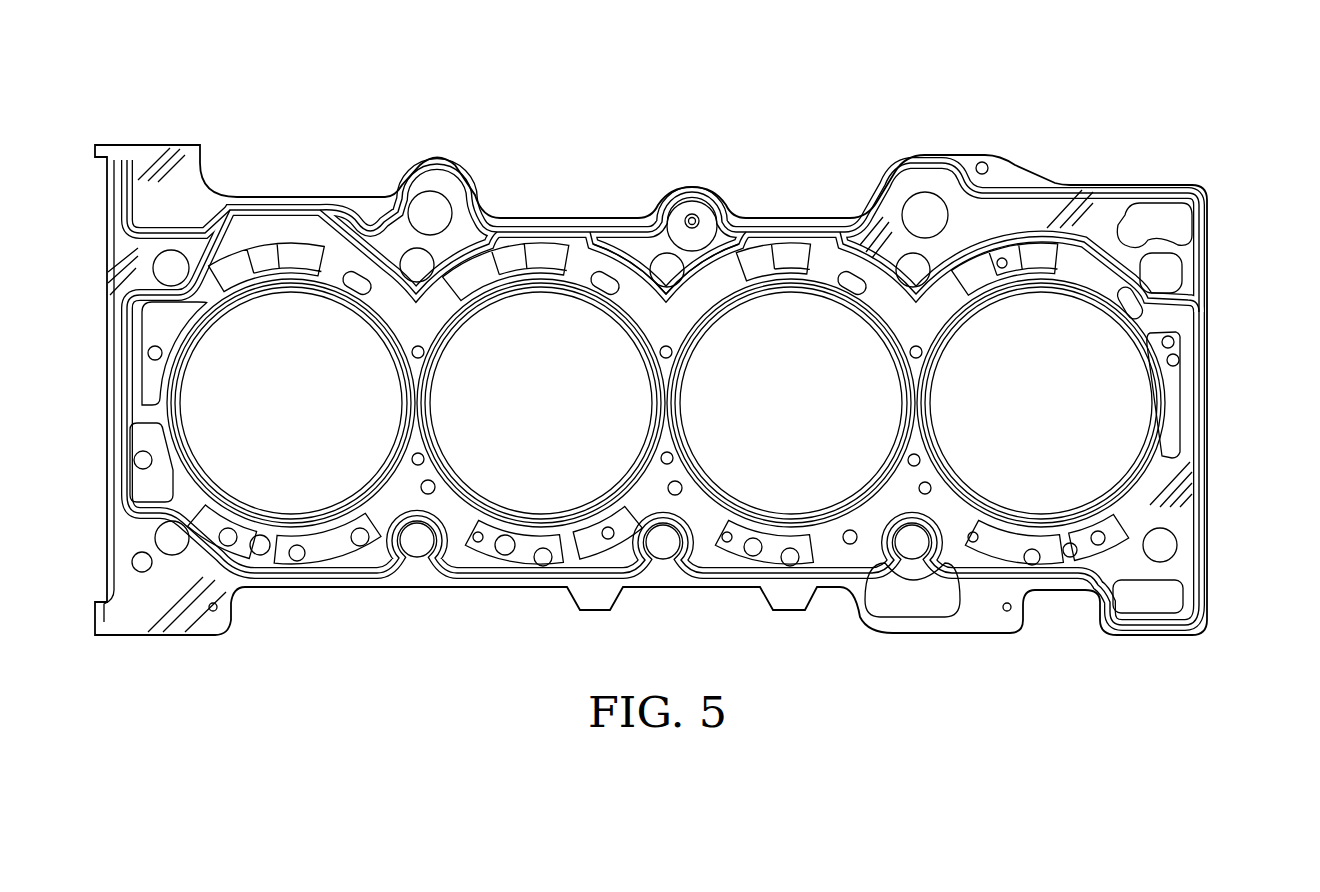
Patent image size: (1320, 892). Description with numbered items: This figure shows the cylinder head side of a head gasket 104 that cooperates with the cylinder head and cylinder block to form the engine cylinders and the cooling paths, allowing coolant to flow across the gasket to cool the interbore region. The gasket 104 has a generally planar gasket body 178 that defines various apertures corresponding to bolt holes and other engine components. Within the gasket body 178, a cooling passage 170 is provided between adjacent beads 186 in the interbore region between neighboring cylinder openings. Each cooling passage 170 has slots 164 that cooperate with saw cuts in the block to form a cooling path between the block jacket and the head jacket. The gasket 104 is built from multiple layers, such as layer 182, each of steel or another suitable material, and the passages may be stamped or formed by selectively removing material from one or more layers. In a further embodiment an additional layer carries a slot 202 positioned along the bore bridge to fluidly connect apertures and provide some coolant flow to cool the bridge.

The head gasket 104 is at (982, 83).
The slots 164 is at (418, 354).
The cooling passage 170 is at (437, 412).
The gasket body 178 is at (1207, 266).
The layer 182 is at (720, 283).
The beads 186 is at (367, 494).
The slot 202 is at (976, 316).